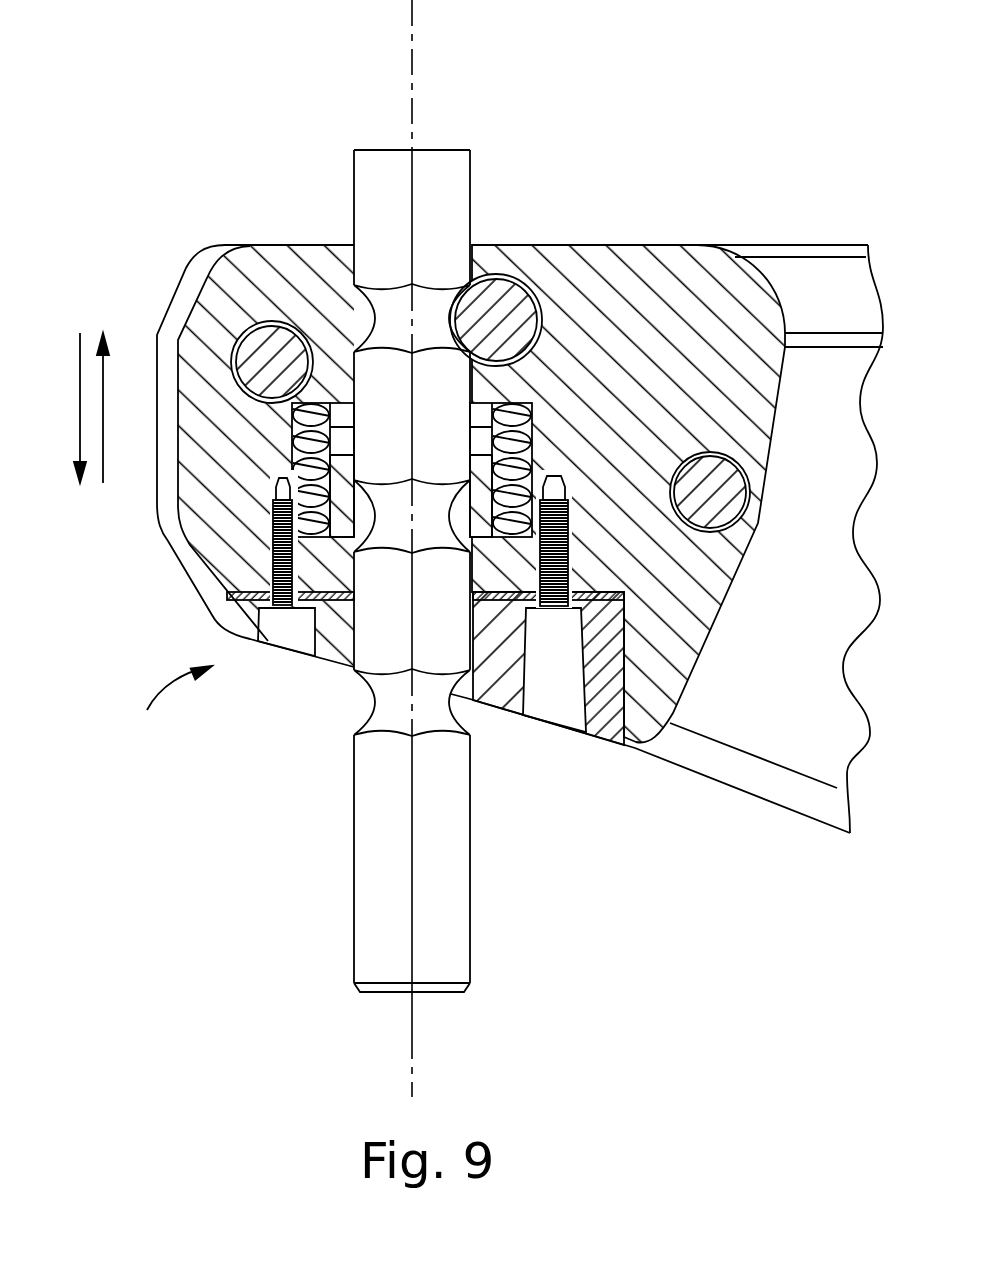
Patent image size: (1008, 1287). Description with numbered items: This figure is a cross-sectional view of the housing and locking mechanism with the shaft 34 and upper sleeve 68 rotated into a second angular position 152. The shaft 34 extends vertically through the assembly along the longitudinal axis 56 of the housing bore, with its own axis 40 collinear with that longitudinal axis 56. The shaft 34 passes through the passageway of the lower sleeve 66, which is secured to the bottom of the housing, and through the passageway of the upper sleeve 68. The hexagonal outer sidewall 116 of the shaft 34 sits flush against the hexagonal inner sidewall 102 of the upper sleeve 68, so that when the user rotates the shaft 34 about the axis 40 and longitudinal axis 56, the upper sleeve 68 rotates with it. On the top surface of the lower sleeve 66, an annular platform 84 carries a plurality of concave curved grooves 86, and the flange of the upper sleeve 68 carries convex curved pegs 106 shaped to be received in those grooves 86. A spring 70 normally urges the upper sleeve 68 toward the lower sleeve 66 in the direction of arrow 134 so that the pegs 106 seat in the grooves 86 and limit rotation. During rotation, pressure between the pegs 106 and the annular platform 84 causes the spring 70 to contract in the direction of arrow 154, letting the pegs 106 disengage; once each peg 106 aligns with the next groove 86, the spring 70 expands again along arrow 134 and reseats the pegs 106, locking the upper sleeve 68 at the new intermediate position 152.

The longitudinal axis 56 is at (412, 75).
The shaft 34 is at (465, 167).
The hexagonal outer sidewall 116 is at (458, 205).
The spring 70 is at (530, 397).
The arrow 134 is at (80, 404).
The arrow 154 is at (103, 418).
The inner sidewall 102 is at (287, 467).
The upper sleeve 68 is at (227, 625).
The second angular position 152 is at (169, 704).
The curved grooves 86 is at (303, 628).
The curved pegs 106 is at (312, 598).
The annular platform 84 is at (540, 606).
The lower sleeve 66 is at (607, 742).
The axis 40 is at (412, 1073).